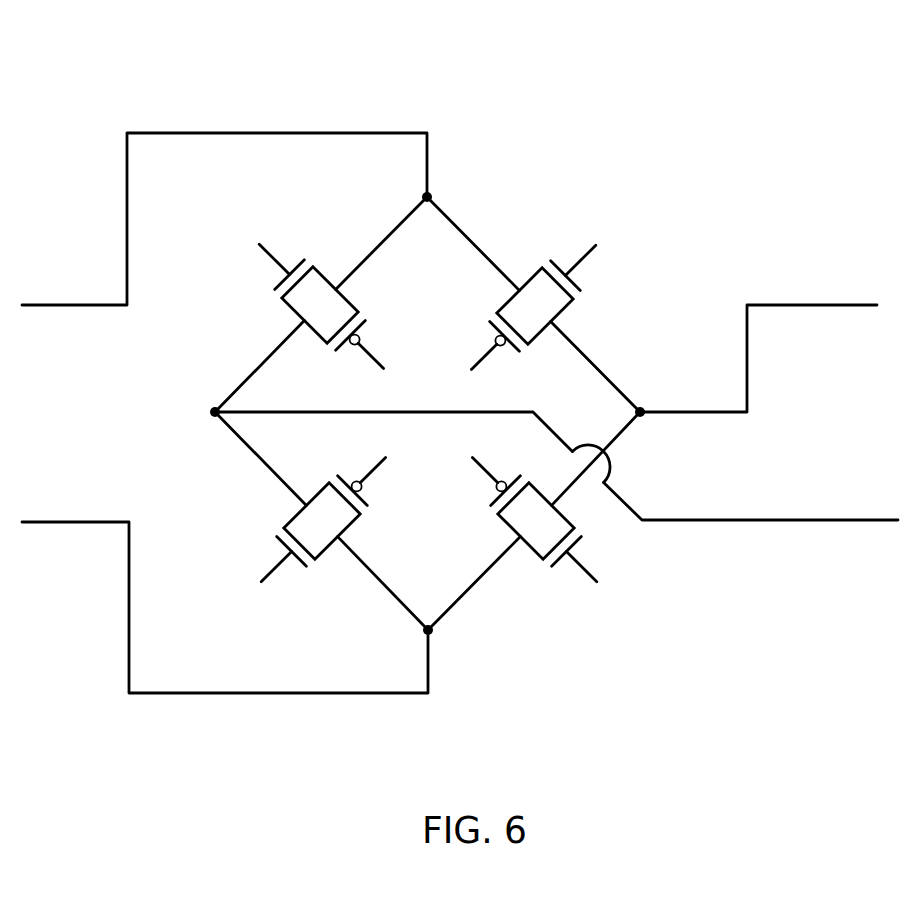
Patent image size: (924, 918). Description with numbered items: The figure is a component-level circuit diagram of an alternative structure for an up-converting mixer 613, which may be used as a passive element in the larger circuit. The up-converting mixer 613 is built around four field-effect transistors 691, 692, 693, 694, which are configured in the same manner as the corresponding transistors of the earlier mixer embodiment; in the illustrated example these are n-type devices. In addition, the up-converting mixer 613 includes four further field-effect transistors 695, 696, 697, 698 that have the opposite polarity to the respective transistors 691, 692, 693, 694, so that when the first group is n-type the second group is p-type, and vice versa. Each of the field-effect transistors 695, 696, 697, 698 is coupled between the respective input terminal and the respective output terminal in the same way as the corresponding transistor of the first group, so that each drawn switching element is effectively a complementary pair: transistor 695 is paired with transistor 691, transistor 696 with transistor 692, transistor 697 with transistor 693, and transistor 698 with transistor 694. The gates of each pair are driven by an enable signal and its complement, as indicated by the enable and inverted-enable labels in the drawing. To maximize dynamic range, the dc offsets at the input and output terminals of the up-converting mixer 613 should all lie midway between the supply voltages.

The up-converting mixer 613 is at (714, 110).
The field-effect transistor 691 is at (321, 309).
The field-effect transistor 692 is at (535, 309).
The field-effect transistor 693 is at (533, 525).
The field-effect transistor 694 is at (318, 523).
The field-effect transistor 695 is at (345, 308).
The field-effect transistor 696 is at (510, 307).
The field-effect transistor 697 is at (511, 518).
The field-effect transistor 698 is at (345, 522).